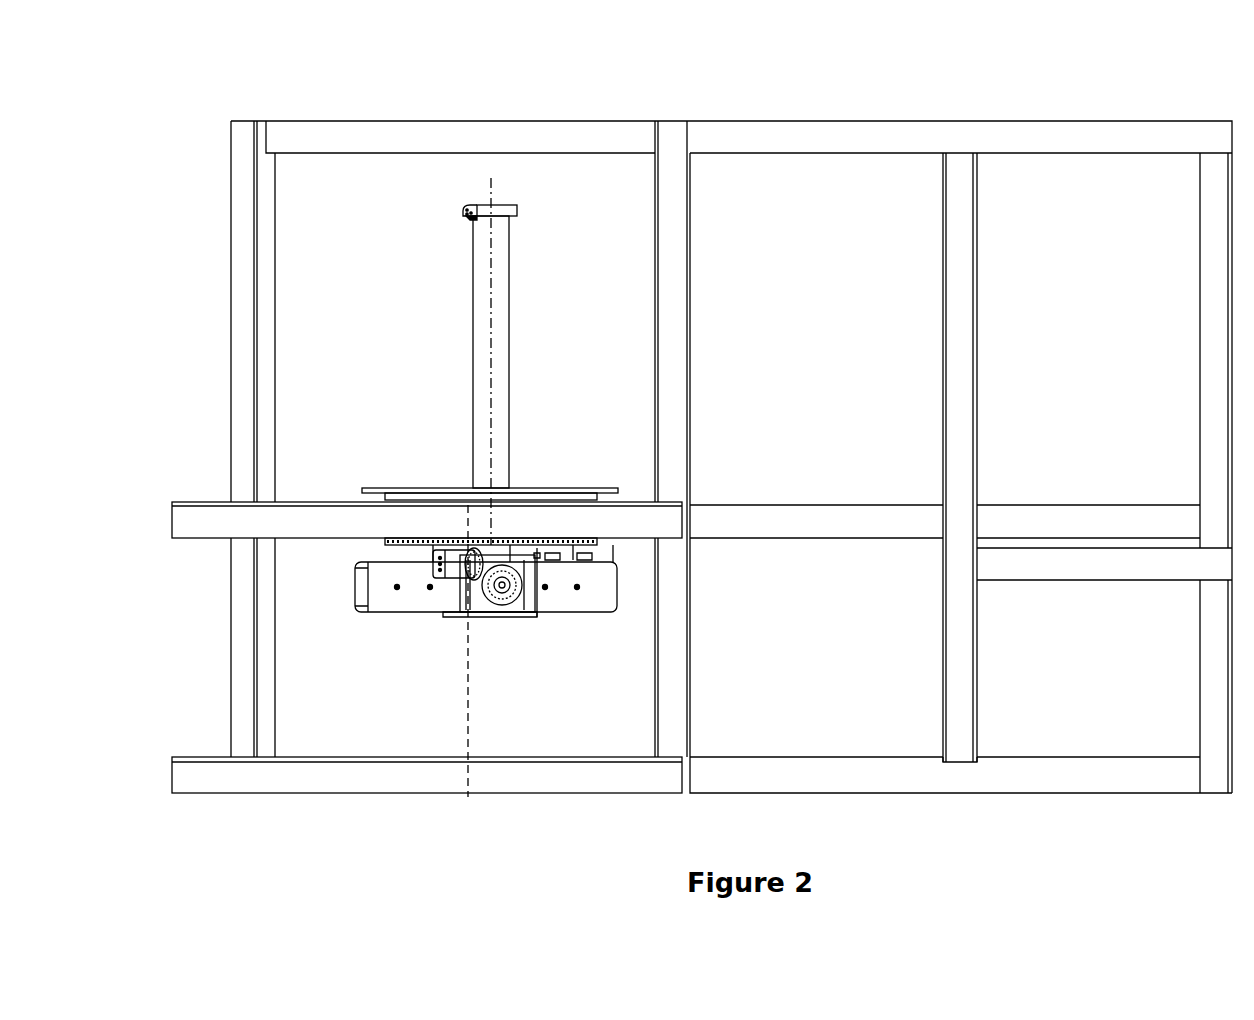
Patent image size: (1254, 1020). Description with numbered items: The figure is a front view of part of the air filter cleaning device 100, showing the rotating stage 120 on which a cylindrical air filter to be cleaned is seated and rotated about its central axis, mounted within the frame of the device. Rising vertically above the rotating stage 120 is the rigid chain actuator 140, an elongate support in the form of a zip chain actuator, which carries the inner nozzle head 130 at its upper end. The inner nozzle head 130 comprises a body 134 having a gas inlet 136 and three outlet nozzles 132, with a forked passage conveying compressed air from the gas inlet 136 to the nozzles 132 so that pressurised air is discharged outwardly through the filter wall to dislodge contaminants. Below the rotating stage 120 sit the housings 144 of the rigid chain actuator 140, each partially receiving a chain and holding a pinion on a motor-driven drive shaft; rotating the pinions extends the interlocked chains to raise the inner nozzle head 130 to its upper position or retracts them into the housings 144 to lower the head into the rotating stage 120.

The air filter cleaning device 100 is at (1040, 86).
The rotating stage 120 is at (396, 470).
The inner nozzle head 130 is at (464, 275).
The outlet nozzles 132 is at (517, 210).
The body 134 is at (472, 208).
The gas inlet 136 is at (470, 217).
The rigid chain actuator 140 is at (458, 321).
The housings 144 is at (404, 590).